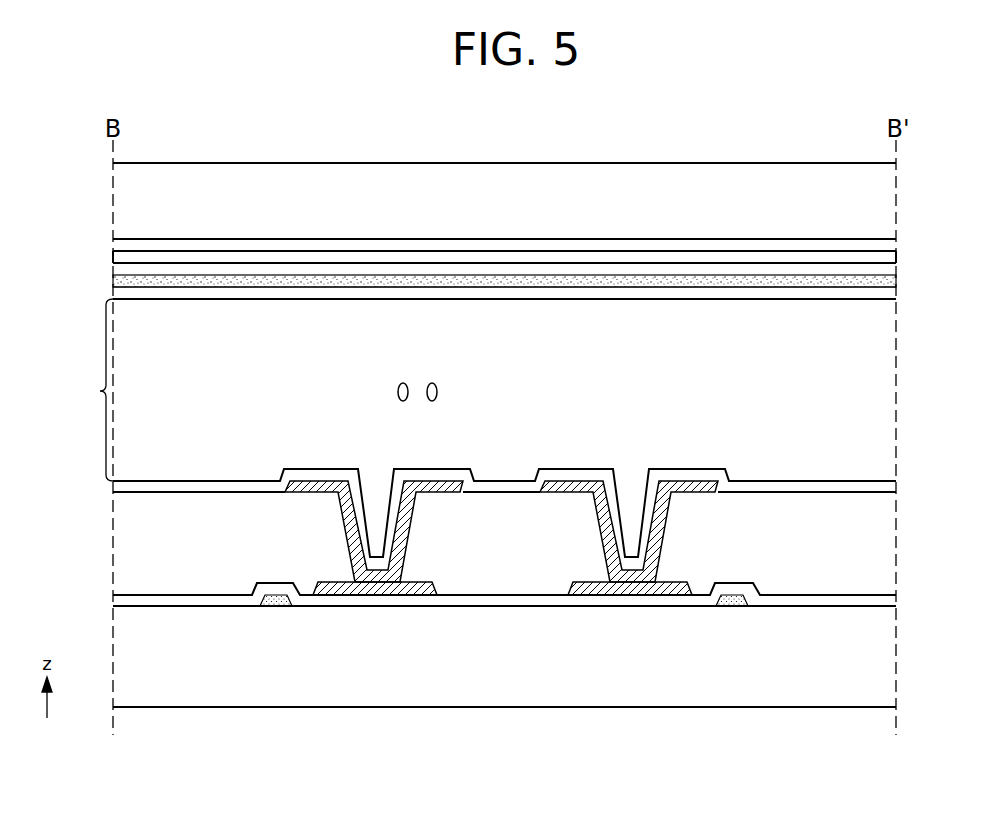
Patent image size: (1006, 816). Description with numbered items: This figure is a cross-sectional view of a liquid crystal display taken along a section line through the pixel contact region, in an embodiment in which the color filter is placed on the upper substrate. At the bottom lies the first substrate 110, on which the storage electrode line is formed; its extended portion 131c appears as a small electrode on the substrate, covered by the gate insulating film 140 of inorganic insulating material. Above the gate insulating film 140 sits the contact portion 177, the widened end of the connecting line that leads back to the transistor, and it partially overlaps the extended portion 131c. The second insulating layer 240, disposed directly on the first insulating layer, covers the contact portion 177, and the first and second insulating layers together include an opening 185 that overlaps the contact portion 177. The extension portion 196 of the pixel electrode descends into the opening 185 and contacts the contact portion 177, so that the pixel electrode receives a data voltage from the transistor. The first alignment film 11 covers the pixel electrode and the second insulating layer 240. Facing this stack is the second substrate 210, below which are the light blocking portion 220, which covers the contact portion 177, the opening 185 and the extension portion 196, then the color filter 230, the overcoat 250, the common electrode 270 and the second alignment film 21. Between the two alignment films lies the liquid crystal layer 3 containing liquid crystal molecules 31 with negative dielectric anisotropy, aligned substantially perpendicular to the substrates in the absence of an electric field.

The second substrate 210 is at (932, 197).
The light blocking portion 220 is at (928, 224).
The color filter 230 is at (928, 252).
The overcoat 250 is at (928, 277).
The common electrode 270 is at (928, 300).
The second alignment film 21 is at (928, 333).
The liquid crystal layer 3 is at (99, 390).
The liquid crystal molecules 31 is at (467, 392).
The first alignment film 11 is at (922, 458).
The second insulating layer 240 is at (928, 548).
The gate insulating film 140 is at (928, 600).
The first substrate 110 is at (928, 665).
The extended portion 131c is at (268, 732).
The opening 185 is at (328, 732).
The contact portion 177 is at (400, 732).
The extension portion 196 is at (445, 732).